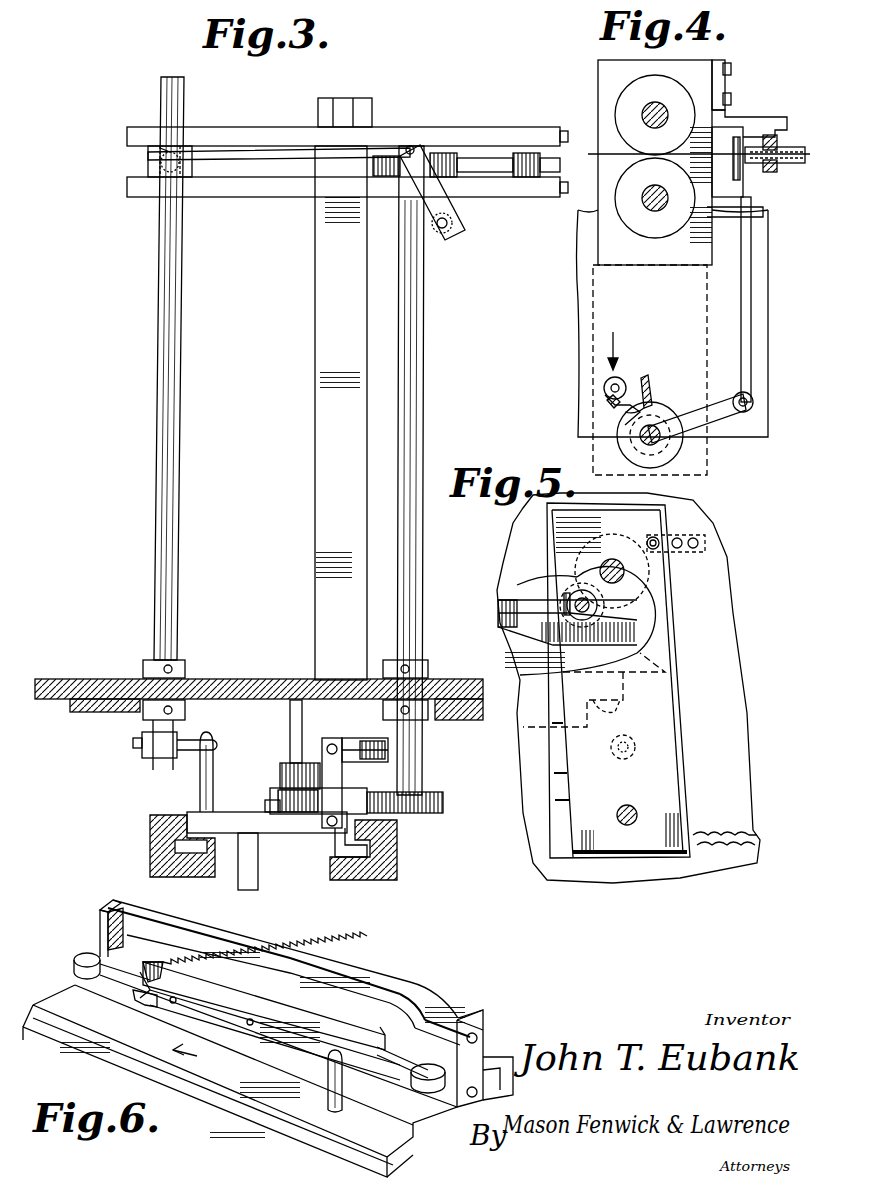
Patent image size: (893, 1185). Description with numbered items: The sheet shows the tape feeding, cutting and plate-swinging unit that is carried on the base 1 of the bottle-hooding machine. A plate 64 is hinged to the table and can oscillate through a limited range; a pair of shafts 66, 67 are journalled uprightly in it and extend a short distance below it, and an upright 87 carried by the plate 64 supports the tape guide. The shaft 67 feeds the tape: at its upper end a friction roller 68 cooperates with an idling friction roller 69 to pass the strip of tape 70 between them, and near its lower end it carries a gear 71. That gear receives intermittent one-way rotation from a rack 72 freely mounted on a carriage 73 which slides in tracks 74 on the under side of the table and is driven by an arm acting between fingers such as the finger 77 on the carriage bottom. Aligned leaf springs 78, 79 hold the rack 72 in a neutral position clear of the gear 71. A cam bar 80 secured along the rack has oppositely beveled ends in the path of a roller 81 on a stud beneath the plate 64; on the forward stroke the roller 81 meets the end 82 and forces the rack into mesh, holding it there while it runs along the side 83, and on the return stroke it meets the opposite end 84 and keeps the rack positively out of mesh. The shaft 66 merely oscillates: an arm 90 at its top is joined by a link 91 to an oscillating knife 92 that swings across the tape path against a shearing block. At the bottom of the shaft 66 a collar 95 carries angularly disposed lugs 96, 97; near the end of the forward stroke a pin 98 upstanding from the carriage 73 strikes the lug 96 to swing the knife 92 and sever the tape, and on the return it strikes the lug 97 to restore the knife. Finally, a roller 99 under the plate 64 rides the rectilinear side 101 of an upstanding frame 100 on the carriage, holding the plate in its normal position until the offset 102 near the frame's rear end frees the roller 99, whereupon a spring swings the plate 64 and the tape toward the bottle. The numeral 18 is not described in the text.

In FIG. 5, the base 1 is at (525, 790).
In FIG. 6, the knob 18 is at (112, 966).
In FIG. 3, the plate 64 is at (238, 678).
In FIG. 5, the plate 64 is at (665, 594).
In FIG. 3, the shaft 66 is at (155, 386).
In FIG. 4, the shaft 66 is at (655, 445).
In FIG. 3, the shaft 67 is at (422, 357).
In FIG. 4, the shaft 67 is at (640, 205).
In FIG. 5, the shaft 67 is at (625, 575).
In FIG. 3, the friction roller 68 is at (440, 152).
In FIG. 3, the idling friction roller 69 is at (525, 150).
In FIG. 4, the idling friction roller 69 is at (625, 98).
In FIG. 3, the tape 70 is at (462, 150).
In FIG. 3, the gear 71 is at (425, 795).
In FIG. 5, the gear 71 is at (643, 616).
In FIG. 3, the rack 72 is at (342, 833).
In FIG. 6, the rack 72 is at (298, 992).
In FIG. 3, the carriage 73 is at (190, 814).
In FIG. 6, the carriage 73 is at (400, 1125).
In FIG. 3, the tracks 74 is at (150, 860).
In FIG. 3, the finger 77 is at (258, 855).
In FIG. 6, the leaf spring 78 is at (100, 955).
In FIG. 6, the leaf spring 79 is at (425, 1070).
In FIG. 3, the cam bar 80 is at (318, 766).
In FIG. 6, the cam bar 80 is at (228, 985).
In FIG. 3, the roller 81 is at (280, 778).
In FIG. 6, the end of cam bar 82 is at (142, 975).
In FIG. 6, the longitudinal side of cam bar 83 is at (150, 1005).
In FIG. 6, the opposite end of cam bar 84 is at (385, 1047).
In FIG. 3, the upright 87 is at (318, 258).
In FIG. 3, the arm 90 is at (160, 148).
In FIG. 4, the arm 90 is at (730, 420).
In FIG. 3, the link 91 is at (258, 150).
In FIG. 4, the link 91 is at (751, 262).
In FIG. 3, the oscillating knife 92 is at (402, 140).
In FIG. 4, the oscillating knife 92 is at (742, 145).
In FIG. 3, the collar 95 is at (142, 748).
In FIG. 4, the lug 96 is at (620, 412).
In FIG. 4, the lug 97 is at (648, 378).
In FIG. 3, the pin 98 is at (200, 790).
In FIG. 4, the pin 98 is at (604, 387).
In FIG. 6, the pin 98 is at (330, 1100).
In FIG. 3, the roller 99 is at (365, 742).
In FIG. 5, the roller 99 is at (565, 598).
In FIG. 3, the upstanding frame 100 is at (350, 740).
In FIG. 5, the upstanding frame 100 is at (645, 640).
In FIG. 6, the upstanding frame 100 is at (405, 958).
In FIG. 6, the rectilinear side 101 is at (290, 955).
In FIG. 5, the offset 102 is at (498, 612).
In FIG. 6, the offset 102 is at (460, 1012).